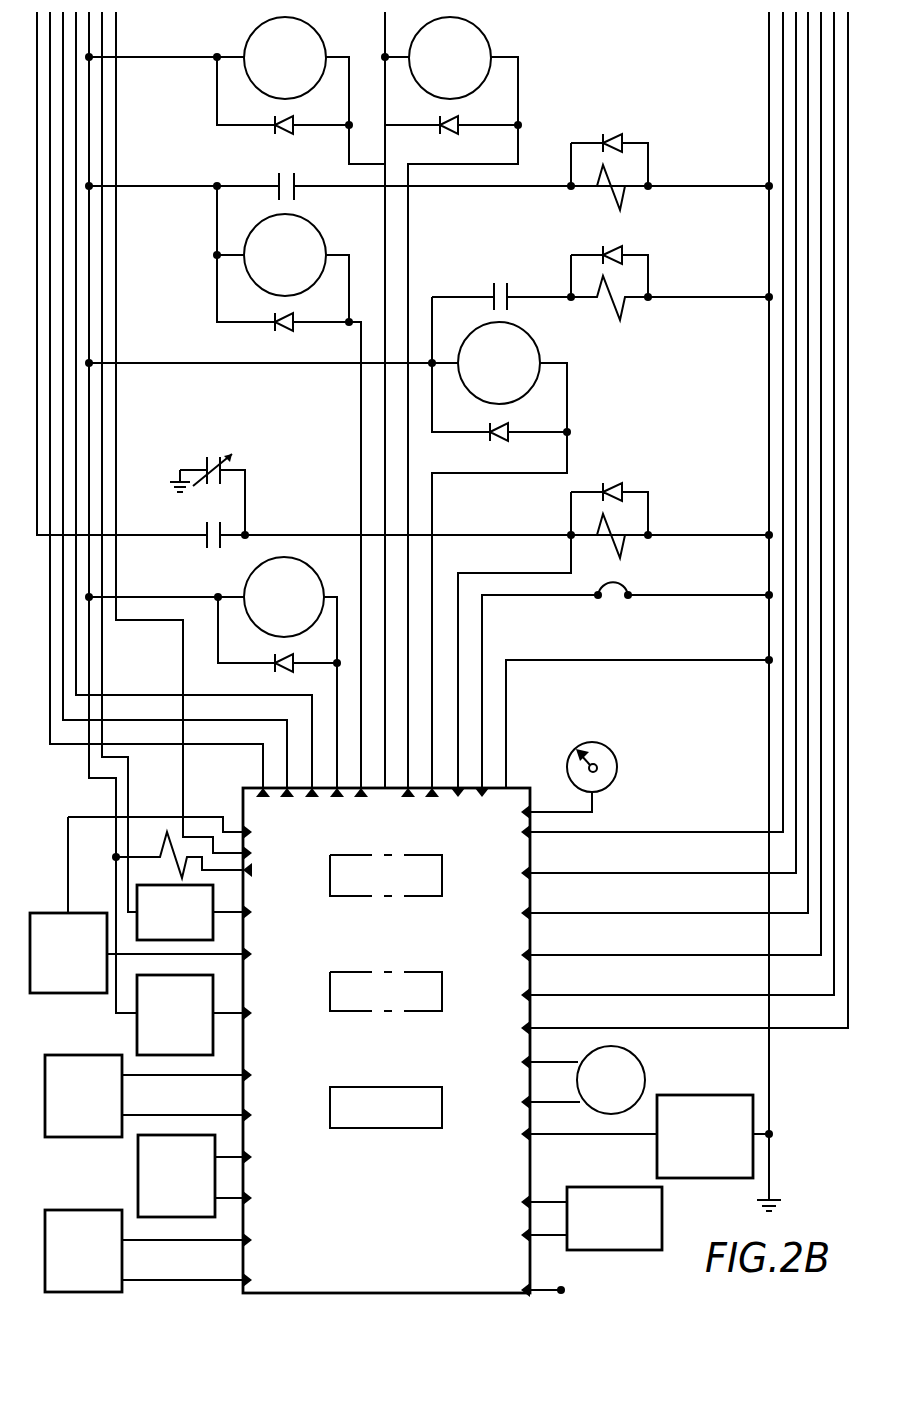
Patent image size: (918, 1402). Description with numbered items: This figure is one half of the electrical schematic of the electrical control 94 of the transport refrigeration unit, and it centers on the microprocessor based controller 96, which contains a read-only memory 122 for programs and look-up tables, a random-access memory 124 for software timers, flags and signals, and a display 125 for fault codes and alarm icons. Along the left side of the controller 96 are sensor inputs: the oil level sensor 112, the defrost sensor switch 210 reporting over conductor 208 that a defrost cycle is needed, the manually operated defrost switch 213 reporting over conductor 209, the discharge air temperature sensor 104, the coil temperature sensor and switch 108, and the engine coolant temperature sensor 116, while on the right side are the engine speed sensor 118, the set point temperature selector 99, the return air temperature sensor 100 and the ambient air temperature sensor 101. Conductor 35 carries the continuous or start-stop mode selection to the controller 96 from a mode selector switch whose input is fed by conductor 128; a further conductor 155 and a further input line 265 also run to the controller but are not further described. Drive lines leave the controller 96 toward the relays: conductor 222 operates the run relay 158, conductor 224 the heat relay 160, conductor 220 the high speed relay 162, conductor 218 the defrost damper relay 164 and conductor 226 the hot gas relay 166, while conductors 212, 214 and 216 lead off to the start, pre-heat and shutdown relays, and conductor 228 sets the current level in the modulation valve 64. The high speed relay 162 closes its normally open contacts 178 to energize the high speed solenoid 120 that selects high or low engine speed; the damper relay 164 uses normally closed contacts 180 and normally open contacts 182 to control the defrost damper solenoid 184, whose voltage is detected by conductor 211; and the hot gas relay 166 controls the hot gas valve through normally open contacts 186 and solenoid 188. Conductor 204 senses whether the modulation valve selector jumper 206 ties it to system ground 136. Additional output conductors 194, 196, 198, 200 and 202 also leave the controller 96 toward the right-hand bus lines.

The conductor 35 is at (116, 30).
The modulation valve 64 is at (165, 855).
The electrical control 94 is at (68, 1181).
The microprocessor based controller 96 is at (532, 1163).
The set point temperature selector 99 is at (617, 773).
The return air temperature sensor 100 is at (662, 1230).
The ambient air temperature sensor 101 is at (583, 1268).
The discharge air temperature sensor 104 is at (68, 1138).
The coil temperature sensor and switch 108 is at (138, 1162).
The oil level sensor 112 is at (81, 994).
The engine coolant temperature sensor 116 is at (82, 1210).
The engine speed sensor 118 is at (645, 1082).
The high speed solenoid 120 is at (610, 196).
The read-only memory 122 is at (442, 886).
The random-access memory 124 is at (442, 1004).
The display 125 is at (442, 1113).
The conductor 128 is at (102, 272).
The system ground 136 is at (769, 1100).
The bus line 155 is at (89, 218).
The run relay 158 is at (360, 39).
The heat relay 160 is at (525, 39).
The high speed relay 162 is at (358, 231).
The defrost damper relay 164 is at (352, 569).
The hot gas relay 166 is at (578, 349).
The normally open contacts 178 is at (281, 174).
The normally closed contacts 180 is at (212, 456).
The normally open contacts 182 is at (207, 522).
The defrost damper solenoid 184 is at (613, 527).
The normally open contacts 186 is at (496, 283).
The solenoid 188 is at (613, 290).
The output line 194 is at (779, 998).
The output line 196 is at (758, 958).
The output line 198 is at (760, 917).
The output line 200 is at (755, 878).
The output line 202 is at (749, 838).
The conductor 204 is at (566, 600).
The modulation valve selector jumper 206 is at (613, 603).
The conductor 208 is at (222, 917).
The conductor 209 is at (232, 1010).
The defrost sensor switch 210 is at (137, 928).
The conductor 211 is at (468, 573).
The conductor 212 is at (82, 747).
The manually operated defrost switch 213 is at (137, 1045).
The conductor 214 is at (77, 722).
The conductor 216 is at (150, 684).
The conductor 218 is at (337, 690).
The conductor 220 is at (365, 368).
The conductor 222 is at (349, 143).
The conductor 224 is at (518, 146).
The conductor 226 is at (452, 478).
The conductor 228 is at (250, 875).
The input line 265 is at (243, 830).